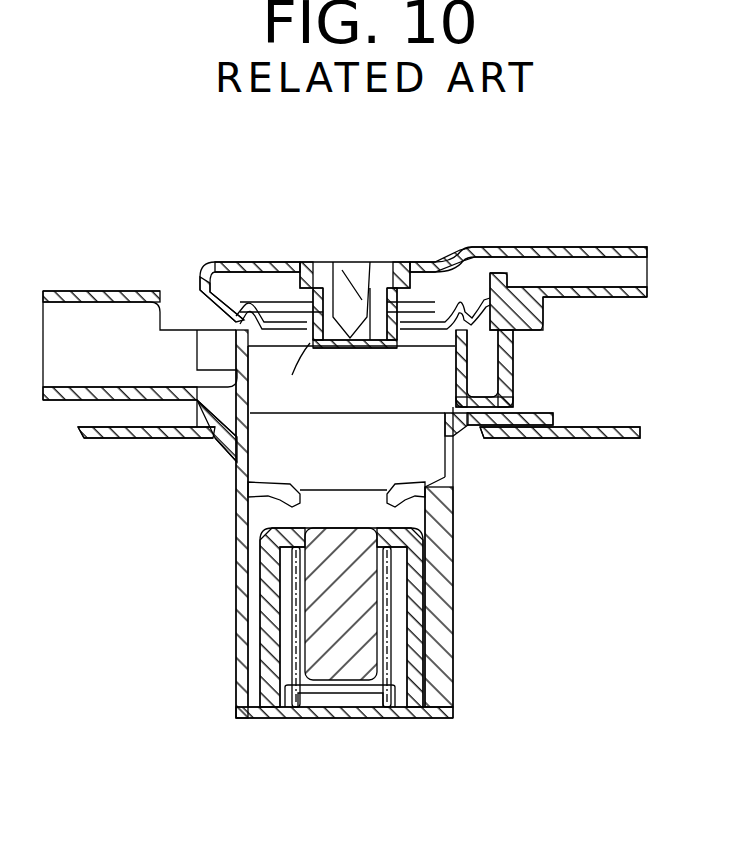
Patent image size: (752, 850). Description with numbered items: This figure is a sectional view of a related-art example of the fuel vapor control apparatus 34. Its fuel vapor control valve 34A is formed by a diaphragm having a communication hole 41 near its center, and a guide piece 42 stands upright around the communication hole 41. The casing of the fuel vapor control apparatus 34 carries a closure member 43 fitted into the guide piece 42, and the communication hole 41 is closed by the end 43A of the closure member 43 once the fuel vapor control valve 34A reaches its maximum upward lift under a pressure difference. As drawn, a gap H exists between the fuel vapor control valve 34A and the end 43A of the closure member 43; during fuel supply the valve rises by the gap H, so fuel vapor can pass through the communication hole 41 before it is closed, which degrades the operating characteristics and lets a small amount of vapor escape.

The fuel vapor control apparatus 34 is at (483, 238).
The fuel vapor control valve 34A is at (410, 322).
The communication hole 41 is at (350, 353).
The guide piece 42 is at (330, 293).
The closure member 43 is at (494, 274).
The end of the closure member 43A is at (349, 351).
The gap H is at (295, 376).